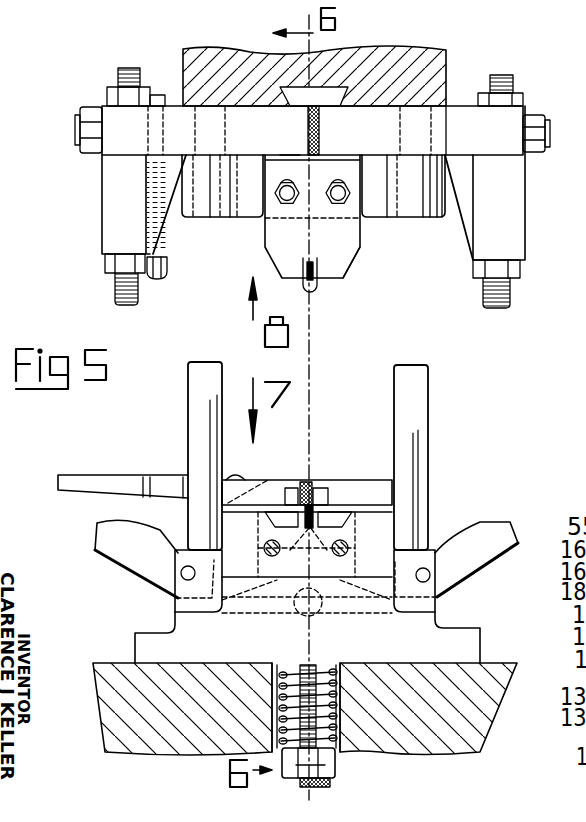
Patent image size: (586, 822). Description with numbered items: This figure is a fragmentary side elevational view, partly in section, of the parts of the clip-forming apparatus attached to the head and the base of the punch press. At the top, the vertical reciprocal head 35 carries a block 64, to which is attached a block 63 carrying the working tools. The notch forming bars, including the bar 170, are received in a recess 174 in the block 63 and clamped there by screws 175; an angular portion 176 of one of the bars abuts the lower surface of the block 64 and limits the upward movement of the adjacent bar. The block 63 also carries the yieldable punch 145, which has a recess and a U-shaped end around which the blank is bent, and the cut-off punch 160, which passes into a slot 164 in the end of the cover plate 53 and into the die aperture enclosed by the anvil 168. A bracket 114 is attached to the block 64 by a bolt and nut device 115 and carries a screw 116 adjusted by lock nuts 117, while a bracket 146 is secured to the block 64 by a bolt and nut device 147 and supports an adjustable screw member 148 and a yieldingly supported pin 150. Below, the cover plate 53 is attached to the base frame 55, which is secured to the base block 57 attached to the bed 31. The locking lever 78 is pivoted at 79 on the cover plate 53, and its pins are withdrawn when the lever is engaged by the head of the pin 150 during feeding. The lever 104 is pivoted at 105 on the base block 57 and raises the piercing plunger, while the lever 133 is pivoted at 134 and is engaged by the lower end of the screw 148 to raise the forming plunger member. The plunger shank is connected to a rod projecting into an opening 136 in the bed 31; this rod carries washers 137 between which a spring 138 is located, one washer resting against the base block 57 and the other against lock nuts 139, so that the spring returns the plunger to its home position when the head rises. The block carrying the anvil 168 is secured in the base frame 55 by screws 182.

The bed 31 is at (490, 717).
The vertical reciprocal head 35 is at (395, 50).
The cover plate 53 is at (337, 486).
The base frame 55 is at (426, 506).
The base block 57 is at (450, 628).
The block 63 is at (252, 220).
The block 64 is at (436, 113).
The locking lever 78 is at (95, 477).
The pivot 79 is at (258, 495).
The lever 104 is at (484, 522).
The pivot 105 is at (436, 577).
The bracket 114 is at (525, 186).
The bolt and nut device 115 is at (548, 125).
The screw 116 is at (512, 297).
The lock nuts 117 is at (520, 95).
The lever 133 is at (108, 523).
The pivot 134 is at (186, 570).
The opening 136 is at (336, 686).
The washers 137 is at (298, 667).
The spring 138 is at (263, 670).
The lock nuts 139 is at (335, 767).
The yieldable punch 145 is at (318, 286).
The bracket 146 is at (113, 189).
The bolt and nut device 147 is at (78, 124).
The adjustable screw member 148 is at (113, 283).
The pin 150 is at (167, 276).
The punch 160 is at (315, 266).
The slot 164 is at (313, 480).
The anvil 168 is at (333, 514).
The notch forming bar 170 is at (362, 246).
The recess 174 is at (268, 212).
The screws 175 is at (298, 191).
The angular portion 176 is at (290, 158).
The screws 182 is at (273, 556).